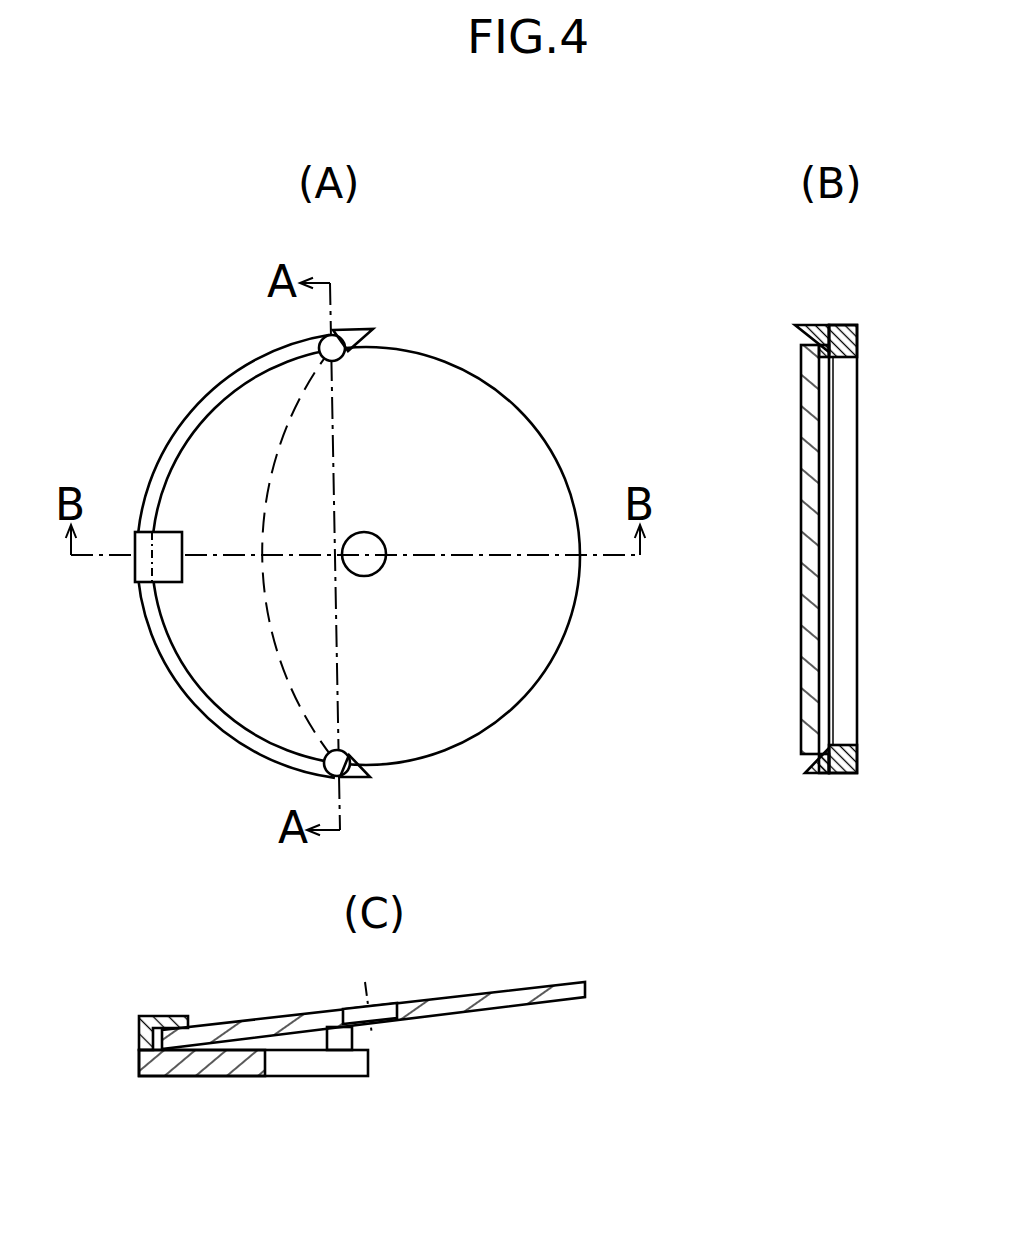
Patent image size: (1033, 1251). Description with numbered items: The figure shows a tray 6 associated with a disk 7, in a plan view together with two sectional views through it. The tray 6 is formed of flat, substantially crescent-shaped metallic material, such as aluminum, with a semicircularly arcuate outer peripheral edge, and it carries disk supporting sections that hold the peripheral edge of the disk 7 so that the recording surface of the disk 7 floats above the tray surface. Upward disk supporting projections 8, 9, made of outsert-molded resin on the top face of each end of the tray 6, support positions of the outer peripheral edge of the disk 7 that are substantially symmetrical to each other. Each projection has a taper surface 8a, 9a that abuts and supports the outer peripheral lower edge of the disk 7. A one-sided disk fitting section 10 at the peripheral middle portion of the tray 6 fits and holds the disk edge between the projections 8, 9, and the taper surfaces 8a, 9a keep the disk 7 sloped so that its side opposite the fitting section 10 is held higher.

The tray 6 is at (205, 392).
The disk 7 is at (502, 387).
The disk supporting projection 8 is at (340, 342).
The taper surface 8a is at (812, 338).
The disk supporting projection 9 is at (355, 771).
The taper surface 9a is at (812, 768).
The one-sided disk fitting section 10 is at (145, 567).